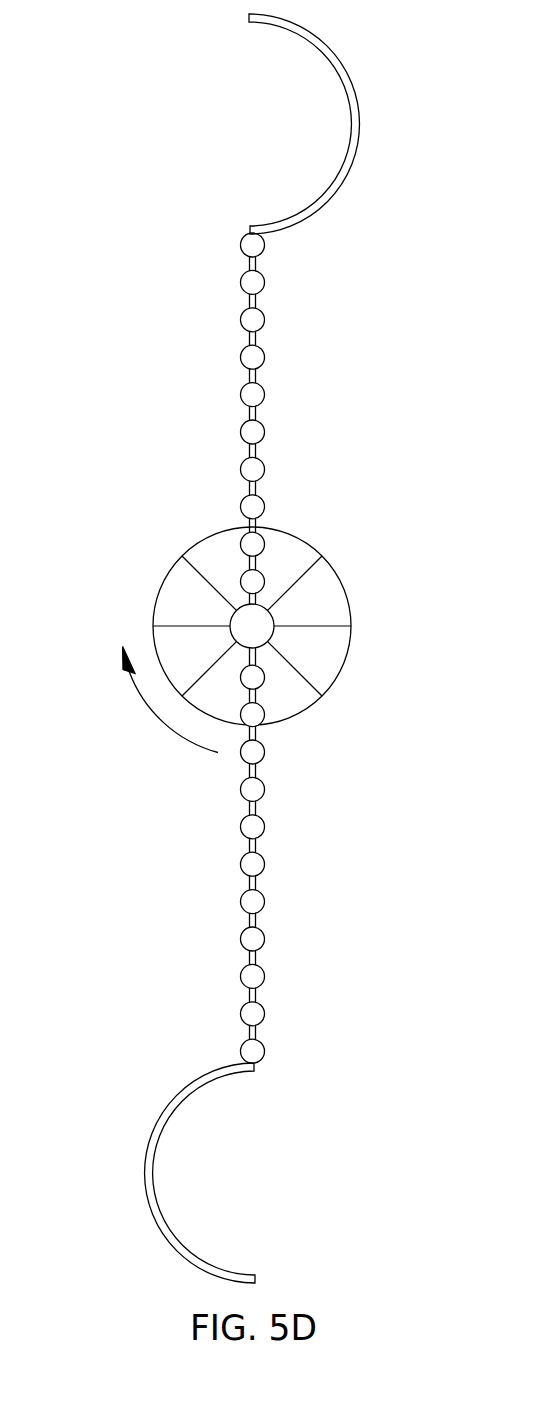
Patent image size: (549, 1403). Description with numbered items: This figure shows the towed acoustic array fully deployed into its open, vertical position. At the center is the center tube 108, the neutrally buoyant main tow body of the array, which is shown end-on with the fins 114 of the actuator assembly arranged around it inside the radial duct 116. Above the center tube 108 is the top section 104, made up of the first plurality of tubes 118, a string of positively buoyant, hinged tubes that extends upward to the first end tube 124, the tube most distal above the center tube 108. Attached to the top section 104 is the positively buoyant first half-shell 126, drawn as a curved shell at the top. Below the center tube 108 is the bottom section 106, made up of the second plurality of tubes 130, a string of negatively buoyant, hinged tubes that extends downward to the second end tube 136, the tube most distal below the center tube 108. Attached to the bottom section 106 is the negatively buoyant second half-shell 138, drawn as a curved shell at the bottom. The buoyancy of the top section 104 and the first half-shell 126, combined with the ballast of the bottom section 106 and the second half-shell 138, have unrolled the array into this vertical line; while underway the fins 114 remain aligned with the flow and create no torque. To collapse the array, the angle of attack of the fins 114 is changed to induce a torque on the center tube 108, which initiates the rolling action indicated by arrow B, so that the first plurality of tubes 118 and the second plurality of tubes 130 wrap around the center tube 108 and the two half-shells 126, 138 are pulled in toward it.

The top section 104 is at (335, 389).
The bottom section 106 is at (195, 888).
The center tube 108 is at (266, 645).
The fins 114 is at (200, 575).
The radial duct 116 is at (348, 592).
The first plurality of tubes 118 is at (196, 398).
The first end tube 124 is at (264, 246).
The first half-shell 126 is at (362, 115).
The second plurality of tubes 130 is at (320, 857).
The second end tube 136 is at (238, 1050).
The second half-shell 138 is at (143, 1184).
The arrow B is at (158, 720).